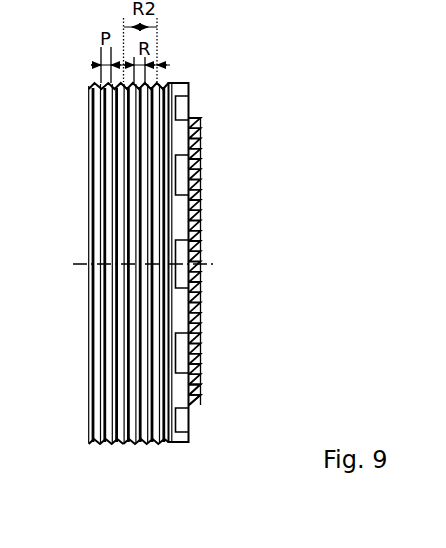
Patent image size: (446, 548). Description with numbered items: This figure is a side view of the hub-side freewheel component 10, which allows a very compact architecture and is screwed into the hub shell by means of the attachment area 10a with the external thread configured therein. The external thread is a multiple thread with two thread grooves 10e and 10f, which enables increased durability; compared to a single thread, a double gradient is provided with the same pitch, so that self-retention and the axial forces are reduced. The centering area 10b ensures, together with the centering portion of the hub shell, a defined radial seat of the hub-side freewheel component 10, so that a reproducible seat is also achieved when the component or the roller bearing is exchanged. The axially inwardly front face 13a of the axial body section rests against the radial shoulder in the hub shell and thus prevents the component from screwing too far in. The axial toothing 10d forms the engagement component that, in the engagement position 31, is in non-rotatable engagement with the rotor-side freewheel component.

The hub-side freewheel component 10 is at (85, 96).
The attachment area 10a is at (94, 57).
The centering area 10b is at (176, 80).
The axial toothing 10d is at (210, 391).
The thread groove 10e is at (125, 445).
The thread groove 10f is at (130, 445).
The axially inwardly front face 13a is at (90, 438).
The engagement position 31 is at (202, 154).